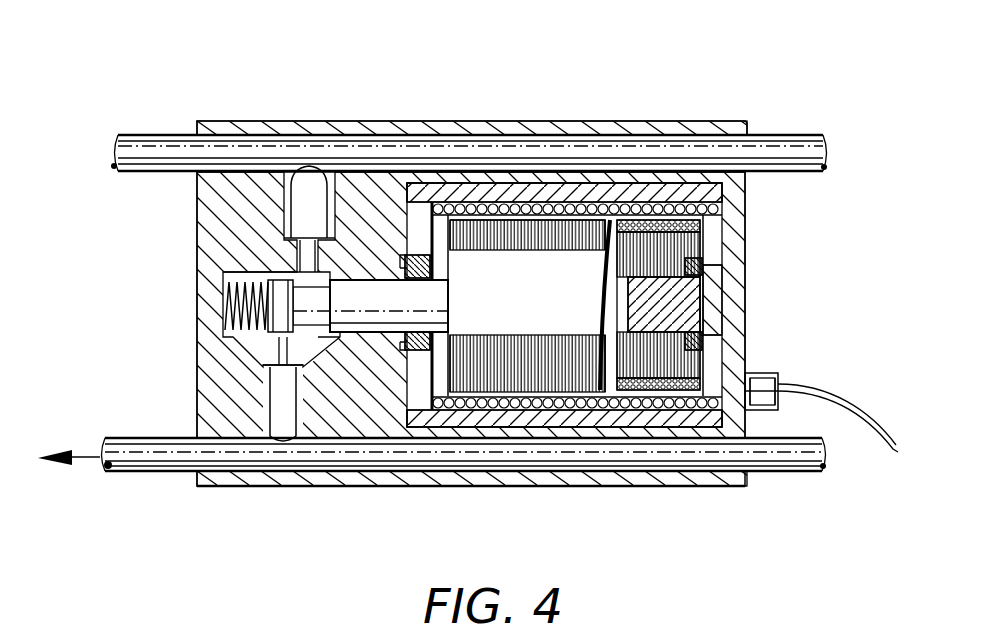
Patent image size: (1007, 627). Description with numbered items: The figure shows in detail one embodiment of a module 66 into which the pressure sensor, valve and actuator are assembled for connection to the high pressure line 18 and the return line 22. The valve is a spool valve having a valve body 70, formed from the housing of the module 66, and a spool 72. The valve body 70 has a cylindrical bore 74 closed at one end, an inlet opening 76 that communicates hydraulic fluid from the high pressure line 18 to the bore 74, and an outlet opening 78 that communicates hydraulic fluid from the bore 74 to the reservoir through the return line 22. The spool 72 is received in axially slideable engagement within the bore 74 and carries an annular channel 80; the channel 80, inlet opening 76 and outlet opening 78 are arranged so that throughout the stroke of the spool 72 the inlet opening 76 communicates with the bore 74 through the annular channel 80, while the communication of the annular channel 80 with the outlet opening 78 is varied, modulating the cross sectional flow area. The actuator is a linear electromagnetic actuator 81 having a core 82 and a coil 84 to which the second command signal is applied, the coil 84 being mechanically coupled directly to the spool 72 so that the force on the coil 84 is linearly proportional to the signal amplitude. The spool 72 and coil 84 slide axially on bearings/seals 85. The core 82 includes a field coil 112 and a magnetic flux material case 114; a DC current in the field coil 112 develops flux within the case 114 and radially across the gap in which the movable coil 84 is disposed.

The high pressure line 18 is at (154, 134).
The return line 22 is at (133, 447).
The module 66 is at (636, 119).
The valve body 70 is at (212, 229).
The spool 72 is at (376, 283).
The cylindrical bore 74 is at (288, 312).
The inlet opening 76 is at (290, 190).
The outlet opening 78 is at (276, 418).
The annular channel 80 is at (318, 300).
The linear electromagnetic actuator 81 is at (690, 183).
The core 82 is at (750, 202).
The coil 84 is at (702, 226).
The bearings/seals 85 is at (408, 262).
The field coil 112 is at (722, 400).
The magnetic flux material case 114 is at (655, 418).